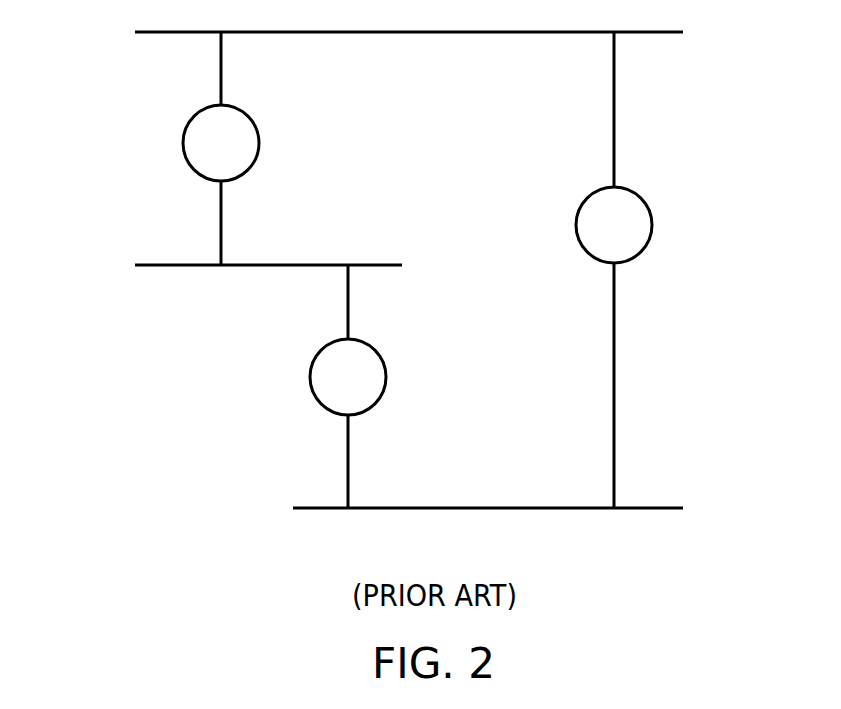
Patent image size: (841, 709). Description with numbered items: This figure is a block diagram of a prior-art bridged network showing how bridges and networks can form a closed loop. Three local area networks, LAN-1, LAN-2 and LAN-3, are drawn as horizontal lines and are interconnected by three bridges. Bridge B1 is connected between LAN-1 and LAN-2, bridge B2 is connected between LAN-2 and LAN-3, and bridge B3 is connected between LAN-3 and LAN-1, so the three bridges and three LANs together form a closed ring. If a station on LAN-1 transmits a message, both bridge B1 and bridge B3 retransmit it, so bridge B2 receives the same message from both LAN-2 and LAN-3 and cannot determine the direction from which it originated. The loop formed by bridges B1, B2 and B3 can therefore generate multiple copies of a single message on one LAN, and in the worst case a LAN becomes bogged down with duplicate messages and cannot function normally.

The bridge B1 is at (221, 148).
The bridge B2 is at (348, 386).
The bridge B3 is at (614, 270).
The LAN LAN-1 is at (358, 32).
The LAN LAN-2 is at (215, 266).
The LAN LAN-3 is at (539, 508).